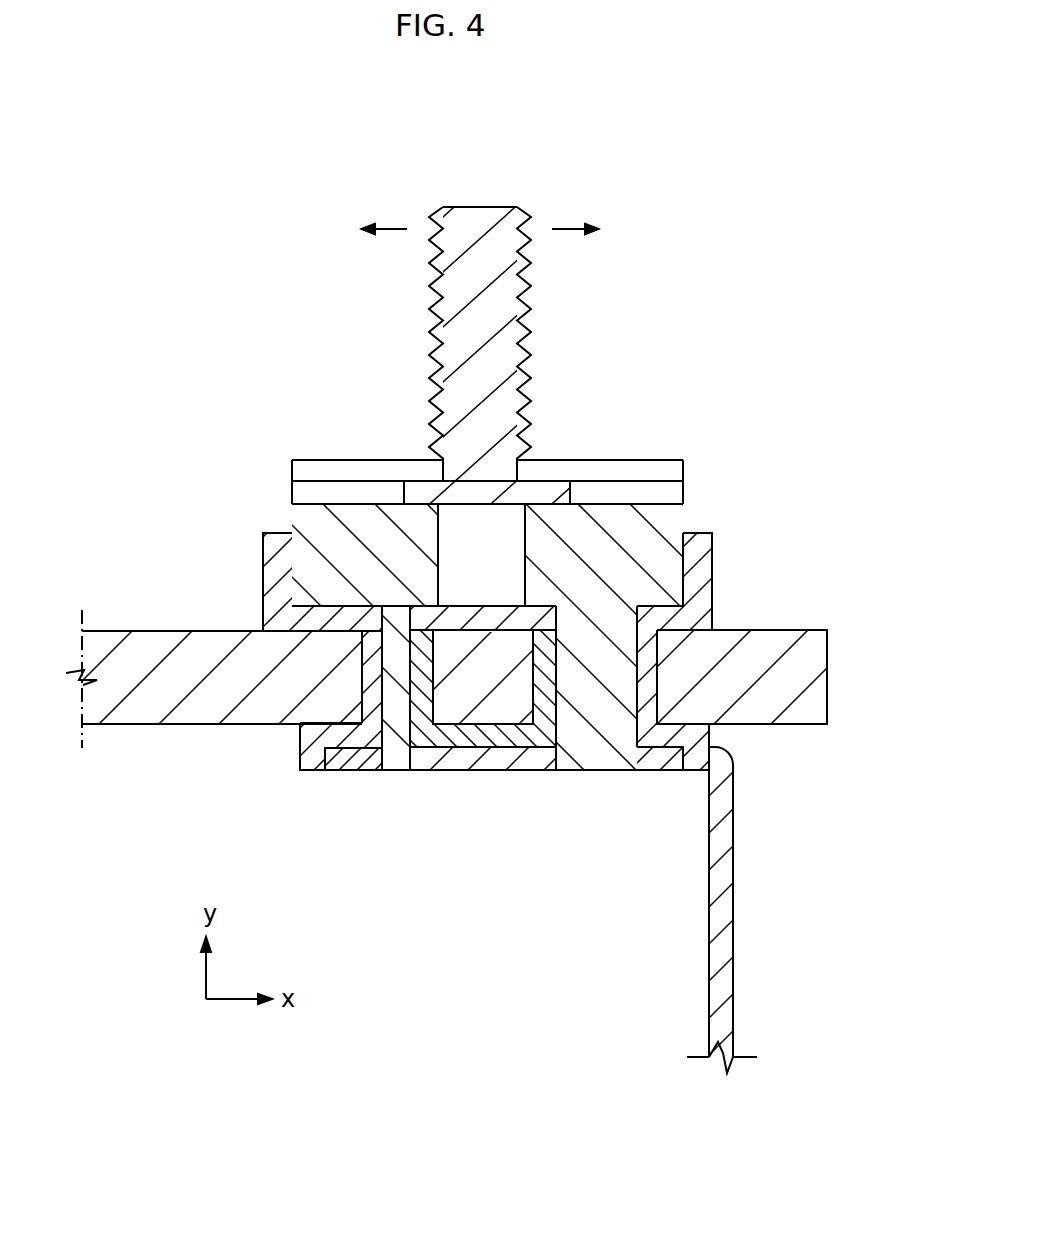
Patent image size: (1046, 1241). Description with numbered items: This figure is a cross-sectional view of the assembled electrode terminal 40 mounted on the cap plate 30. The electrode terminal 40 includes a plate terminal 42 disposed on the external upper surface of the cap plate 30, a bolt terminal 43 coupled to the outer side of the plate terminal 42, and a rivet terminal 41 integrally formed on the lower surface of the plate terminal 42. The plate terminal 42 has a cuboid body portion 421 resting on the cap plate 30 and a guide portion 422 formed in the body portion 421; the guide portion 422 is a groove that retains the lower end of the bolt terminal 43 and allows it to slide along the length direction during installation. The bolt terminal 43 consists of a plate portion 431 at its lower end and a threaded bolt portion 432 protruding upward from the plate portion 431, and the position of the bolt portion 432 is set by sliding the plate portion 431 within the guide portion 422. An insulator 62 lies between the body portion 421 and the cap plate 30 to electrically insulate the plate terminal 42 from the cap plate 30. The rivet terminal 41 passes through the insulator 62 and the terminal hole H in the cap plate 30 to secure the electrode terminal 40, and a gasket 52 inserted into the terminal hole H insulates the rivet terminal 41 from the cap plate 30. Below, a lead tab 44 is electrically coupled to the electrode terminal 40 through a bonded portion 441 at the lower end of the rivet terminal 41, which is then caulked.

The cap plate 30 is at (145, 645).
The electrode terminal 40 is at (620, 266).
The rivet terminal 41 is at (612, 757).
The plate terminal 42 is at (378, 586).
The body portion 421 is at (292, 522).
The guide portion 422 is at (292, 472).
The bolt terminal 43 is at (433, 367).
The plate portion 431 is at (420, 487).
The bolt portion 432 is at (445, 280).
The lead tab 44 is at (623, 838).
The bonded portion 441 is at (453, 762).
The gasket 52 is at (707, 737).
The insulator 62 is at (263, 568).
The terminal hole H is at (652, 672).